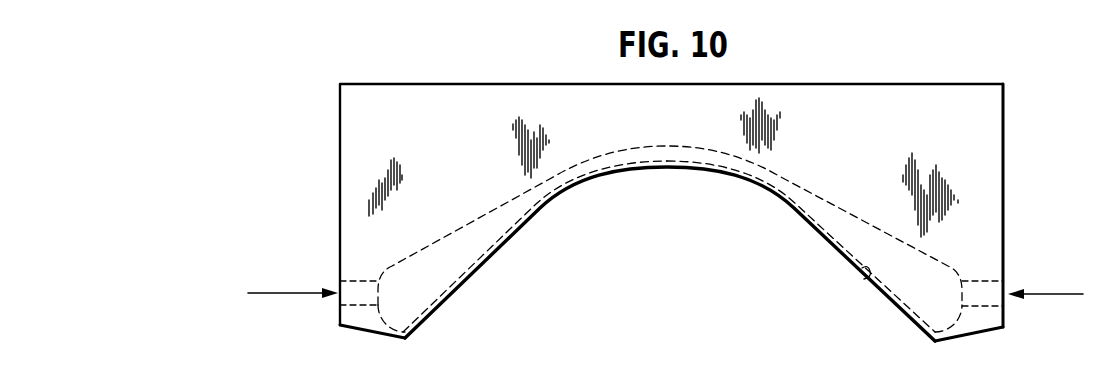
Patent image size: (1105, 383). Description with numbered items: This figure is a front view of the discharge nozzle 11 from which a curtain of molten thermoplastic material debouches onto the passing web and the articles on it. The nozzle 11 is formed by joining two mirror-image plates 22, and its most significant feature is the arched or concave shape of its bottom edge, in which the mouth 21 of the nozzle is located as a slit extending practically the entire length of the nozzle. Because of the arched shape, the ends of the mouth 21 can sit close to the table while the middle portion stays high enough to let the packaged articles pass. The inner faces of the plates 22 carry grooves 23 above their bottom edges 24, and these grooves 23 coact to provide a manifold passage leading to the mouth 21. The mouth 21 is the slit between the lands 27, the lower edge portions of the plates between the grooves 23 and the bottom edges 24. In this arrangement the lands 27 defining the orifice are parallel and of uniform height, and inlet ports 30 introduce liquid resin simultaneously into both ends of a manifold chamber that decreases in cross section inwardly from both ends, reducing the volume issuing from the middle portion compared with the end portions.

The nozzle 11 is at (365, 131).
The mouth of the nozzle 21 is at (555, 203).
The plates 22 is at (985, 168).
The grooves 23 is at (866, 281).
The bottom edges 24 is at (830, 246).
The lands 27 is at (490, 265).
The inlet ports 30 is at (338, 290).